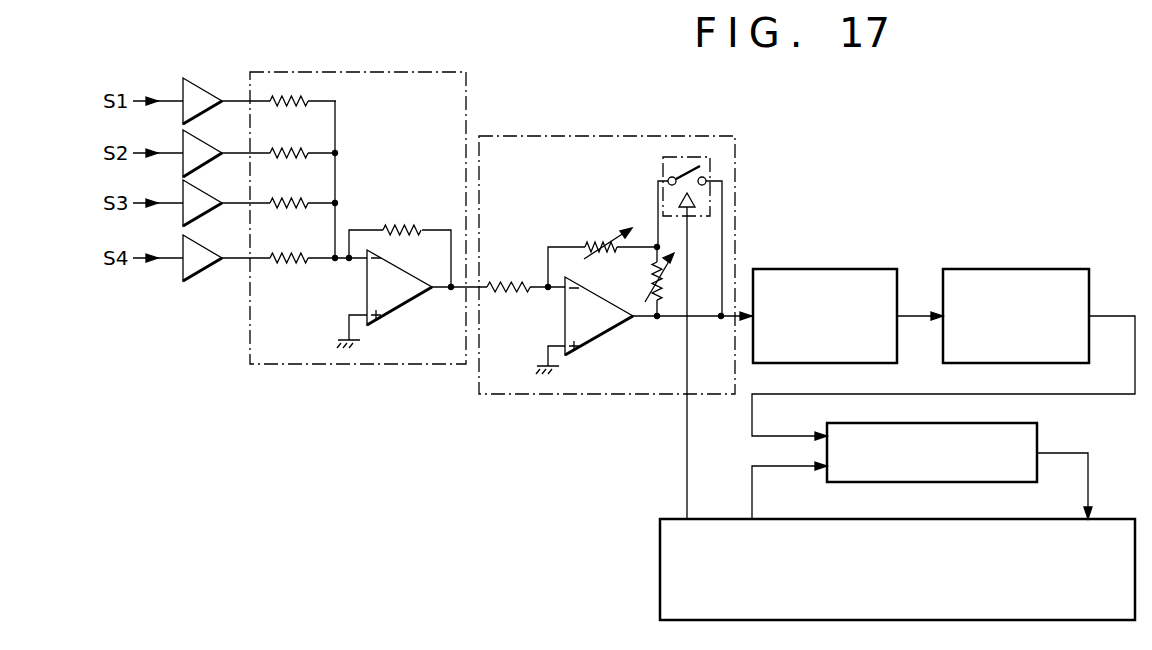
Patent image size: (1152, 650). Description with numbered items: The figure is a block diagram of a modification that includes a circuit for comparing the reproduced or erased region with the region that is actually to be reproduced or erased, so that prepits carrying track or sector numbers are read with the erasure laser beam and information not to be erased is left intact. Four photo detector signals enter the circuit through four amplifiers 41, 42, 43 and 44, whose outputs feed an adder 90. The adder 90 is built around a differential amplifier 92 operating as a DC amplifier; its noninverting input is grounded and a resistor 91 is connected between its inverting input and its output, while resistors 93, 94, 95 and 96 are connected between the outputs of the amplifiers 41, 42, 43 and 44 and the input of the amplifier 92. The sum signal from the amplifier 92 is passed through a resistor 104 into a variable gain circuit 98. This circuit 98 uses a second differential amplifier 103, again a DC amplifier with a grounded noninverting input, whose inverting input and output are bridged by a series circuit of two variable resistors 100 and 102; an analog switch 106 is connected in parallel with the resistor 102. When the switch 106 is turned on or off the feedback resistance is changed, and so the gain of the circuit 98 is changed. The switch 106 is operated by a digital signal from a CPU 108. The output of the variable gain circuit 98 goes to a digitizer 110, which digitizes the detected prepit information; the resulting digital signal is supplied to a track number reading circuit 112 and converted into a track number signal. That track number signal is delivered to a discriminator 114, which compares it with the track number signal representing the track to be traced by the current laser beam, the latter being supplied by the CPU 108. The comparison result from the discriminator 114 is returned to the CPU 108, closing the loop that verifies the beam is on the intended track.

The amplifier 41 is at (202, 87).
The amplifier 42 is at (210, 146).
The amplifier 43 is at (210, 197).
The amplifier 44 is at (210, 250).
The adder 90 is at (358, 247).
The resistor 91 is at (400, 235).
The differential amplifier 92 is at (385, 299).
The resistor 93 is at (289, 69).
The resistor 94 is at (289, 136).
The resistor 95 is at (289, 186).
The resistor 96 is at (289, 239).
The variable gain circuit 98 is at (607, 294).
The variable resistor 100 is at (602, 240).
The variable resistor 102 is at (638, 281).
The differential amplifier 103 is at (594, 325).
The resistor 104 is at (510, 263).
The analog switch 106 is at (721, 334).
The CPU 108 is at (860, 569).
The digitizer 110 is at (825, 294).
The track number reading circuit 112 is at (1016, 294).
The discriminator 114 is at (963, 449).